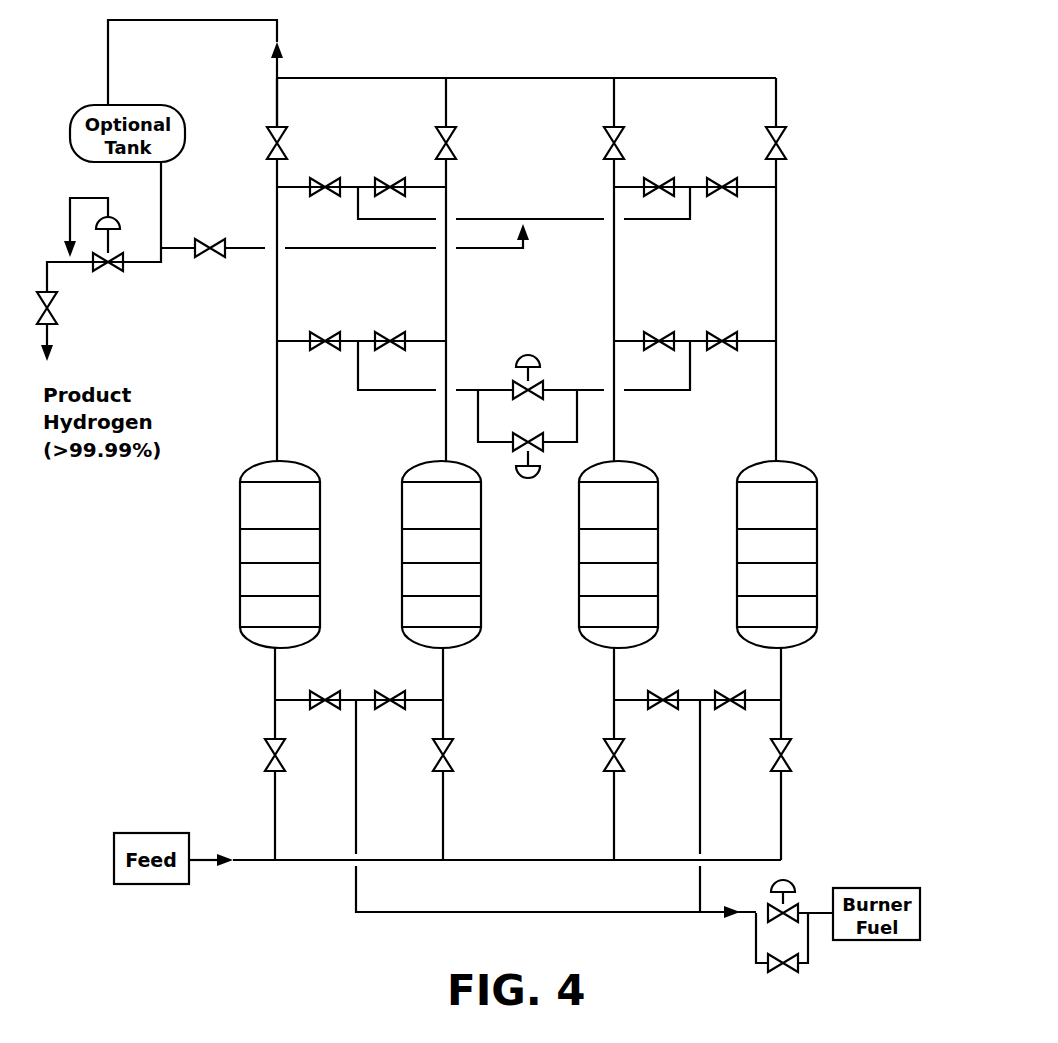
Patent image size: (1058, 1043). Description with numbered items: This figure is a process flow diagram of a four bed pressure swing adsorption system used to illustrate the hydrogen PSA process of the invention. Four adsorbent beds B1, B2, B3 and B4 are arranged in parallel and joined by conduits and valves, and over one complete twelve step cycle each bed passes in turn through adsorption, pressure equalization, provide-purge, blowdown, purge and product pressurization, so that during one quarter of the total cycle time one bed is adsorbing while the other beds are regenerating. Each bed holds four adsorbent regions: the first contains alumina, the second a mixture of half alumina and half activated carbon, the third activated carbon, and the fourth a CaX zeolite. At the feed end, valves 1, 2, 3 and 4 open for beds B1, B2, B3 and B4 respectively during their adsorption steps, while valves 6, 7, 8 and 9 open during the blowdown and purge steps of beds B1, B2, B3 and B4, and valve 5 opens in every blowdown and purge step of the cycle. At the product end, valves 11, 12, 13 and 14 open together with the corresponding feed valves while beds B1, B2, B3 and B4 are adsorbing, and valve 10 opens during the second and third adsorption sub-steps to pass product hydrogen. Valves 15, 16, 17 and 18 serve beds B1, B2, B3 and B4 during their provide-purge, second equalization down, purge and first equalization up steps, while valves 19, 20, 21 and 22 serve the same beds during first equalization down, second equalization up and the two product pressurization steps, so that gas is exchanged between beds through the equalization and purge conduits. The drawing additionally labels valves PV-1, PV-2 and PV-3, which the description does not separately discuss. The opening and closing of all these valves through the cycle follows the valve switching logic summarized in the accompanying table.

The valve 1 is at (267, 755).
The valve 2 is at (435, 755).
The valve 3 is at (606, 755).
The valve 4 is at (773, 755).
The valve 5 is at (783, 974).
The valve 6 is at (325, 688).
The valve 7 is at (390, 688).
The valve 8 is at (663, 688).
The valve 9 is at (730, 688).
The valve 10 is at (210, 261).
The valve 11 is at (262, 143).
The valve 12 is at (431, 143).
The valve 13 is at (599, 143).
The valve 14 is at (761, 143).
The valve 15 is at (325, 329).
The valve 16 is at (390, 329).
The valve 17 is at (659, 329).
The valve 18 is at (722, 329).
The valve 19 is at (325, 175).
The valve 20 is at (390, 175).
The valve 21 is at (659, 175).
The valve 22 is at (722, 175).
The pressure control valve to burner fuel PV-1 is at (758, 901).
The pressure control valve in equalization line PV-2 is at (532, 468).
The pressure control valve in equalization line PV-3 is at (532, 366).
The adsorbent bed B1 is at (262, 554).
The adsorbent bed B2 is at (425, 554).
The adsorbent bed B3 is at (602, 554).
The adsorbent bed B4 is at (759, 554).